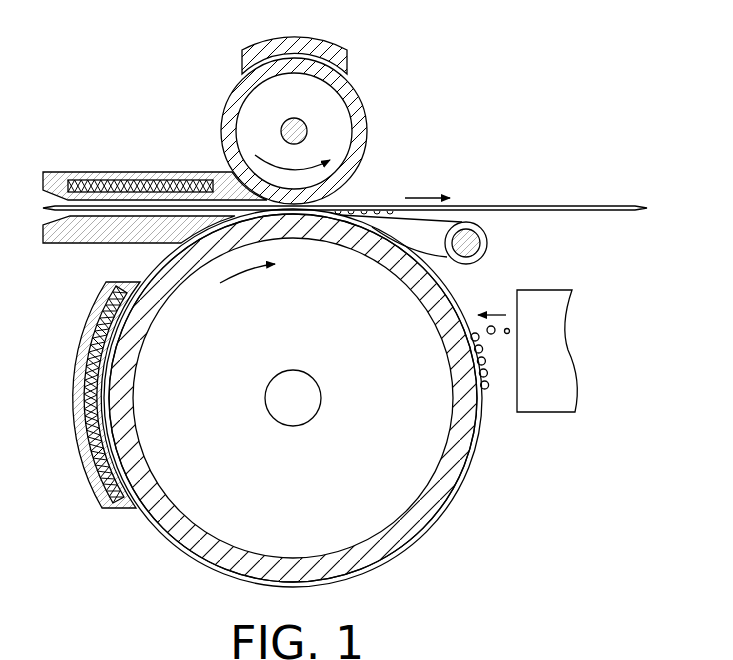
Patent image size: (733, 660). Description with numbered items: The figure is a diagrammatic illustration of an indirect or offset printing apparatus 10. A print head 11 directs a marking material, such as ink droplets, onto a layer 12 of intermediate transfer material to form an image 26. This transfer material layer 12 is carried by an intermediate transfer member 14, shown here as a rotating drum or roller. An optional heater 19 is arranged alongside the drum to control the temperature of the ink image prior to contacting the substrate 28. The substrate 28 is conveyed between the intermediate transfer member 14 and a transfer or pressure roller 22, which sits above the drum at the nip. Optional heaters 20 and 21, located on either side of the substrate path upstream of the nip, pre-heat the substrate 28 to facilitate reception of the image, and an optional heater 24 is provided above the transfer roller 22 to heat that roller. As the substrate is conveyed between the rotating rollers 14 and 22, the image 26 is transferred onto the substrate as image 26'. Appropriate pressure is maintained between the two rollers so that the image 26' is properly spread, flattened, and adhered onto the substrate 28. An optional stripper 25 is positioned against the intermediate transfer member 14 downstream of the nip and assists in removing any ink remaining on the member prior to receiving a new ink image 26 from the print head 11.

The indirect printing apparatus 10 is at (465, 72).
The print head 11 is at (557, 290).
The layer of intermediate transfer material 12 is at (460, 487).
The intermediate transfer member 14 is at (420, 515).
The heater 19 is at (73, 393).
The heater 20 is at (76, 243).
The heater 21 is at (103, 172).
The transfer or pressure roller 22 is at (368, 132).
The heater 24 is at (242, 60).
The stripper 25 is at (486, 257).
The image 26 is at (505, 399).
The image 26' is at (371, 180).
The substrate 28 is at (521, 205).